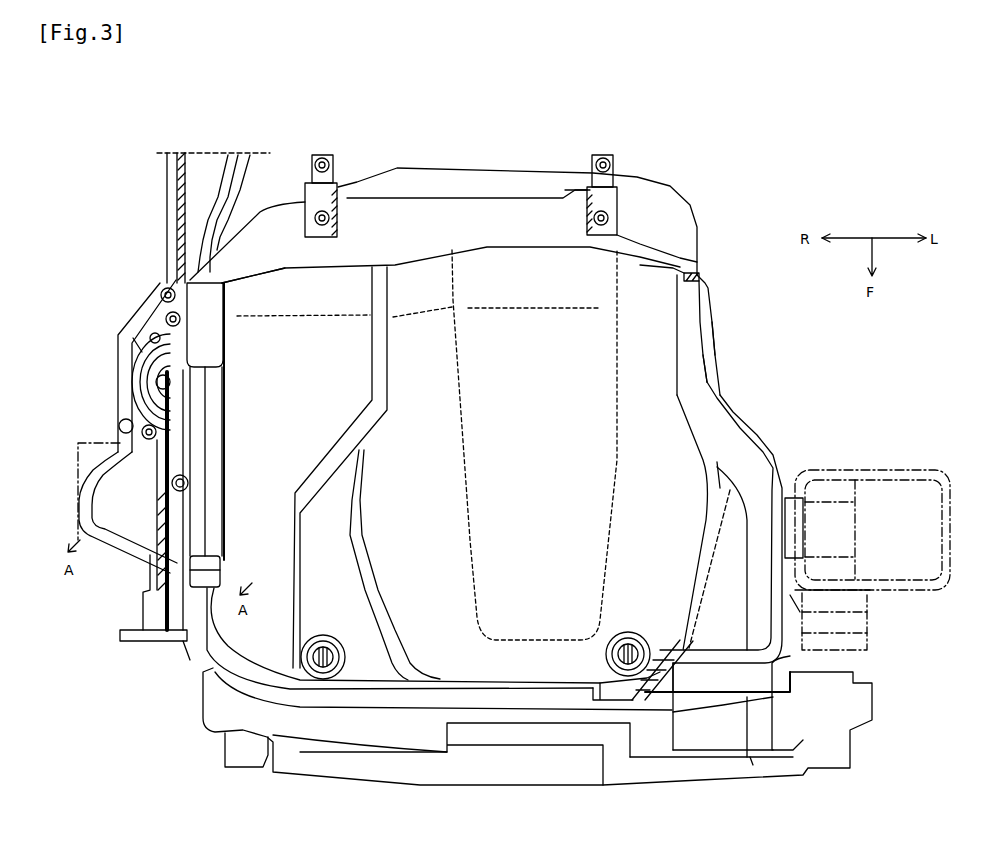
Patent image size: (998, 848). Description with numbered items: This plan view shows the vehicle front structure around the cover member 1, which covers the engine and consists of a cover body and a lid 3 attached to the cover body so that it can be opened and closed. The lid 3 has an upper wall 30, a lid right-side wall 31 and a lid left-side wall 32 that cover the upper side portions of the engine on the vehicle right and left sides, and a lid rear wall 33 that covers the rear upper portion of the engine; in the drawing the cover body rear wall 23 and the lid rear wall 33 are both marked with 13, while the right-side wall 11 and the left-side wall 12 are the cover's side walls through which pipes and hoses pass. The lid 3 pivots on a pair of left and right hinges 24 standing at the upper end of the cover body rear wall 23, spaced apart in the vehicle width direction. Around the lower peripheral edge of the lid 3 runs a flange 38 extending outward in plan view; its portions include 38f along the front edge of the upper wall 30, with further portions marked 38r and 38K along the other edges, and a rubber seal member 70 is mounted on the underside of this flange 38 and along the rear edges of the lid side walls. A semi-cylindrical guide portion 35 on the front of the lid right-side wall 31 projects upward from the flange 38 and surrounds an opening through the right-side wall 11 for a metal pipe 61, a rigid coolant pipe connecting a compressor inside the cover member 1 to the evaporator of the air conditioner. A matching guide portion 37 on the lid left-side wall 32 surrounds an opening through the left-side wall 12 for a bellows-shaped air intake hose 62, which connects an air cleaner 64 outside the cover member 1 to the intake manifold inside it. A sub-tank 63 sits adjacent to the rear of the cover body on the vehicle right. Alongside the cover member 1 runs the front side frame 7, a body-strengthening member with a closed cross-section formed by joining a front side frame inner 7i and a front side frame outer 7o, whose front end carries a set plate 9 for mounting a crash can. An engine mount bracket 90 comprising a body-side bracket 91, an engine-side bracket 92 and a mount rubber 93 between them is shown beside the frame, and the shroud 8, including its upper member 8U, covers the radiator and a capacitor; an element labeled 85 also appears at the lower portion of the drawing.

The cover member 1 is at (168, 724).
The lid 3 is at (645, 236).
The front side frame 7 is at (156, 233).
The front side frame inner 7i is at (200, 163).
The front side frame outer 7o is at (166, 203).
The shroud 8 is at (322, 787).
The upper member 8U is at (453, 787).
The set plate 9 is at (140, 641).
The right-side wall 11 is at (248, 419).
The left-side wall 12 is at (734, 405).
The upper portion 13 is at (536, 256).
The cover body rear wall 23 is at (462, 168).
The hinges 24 is at (338, 162).
The upper wall 30 is at (672, 340).
The lid right-side wall 31 is at (217, 448).
The lid left-side wall 32 is at (700, 388).
The lid rear wall 33 is at (650, 265).
The guide portion 35 is at (213, 551).
The guide portion 37 is at (775, 478).
The flange 38 is at (499, 436).
The flange 38r is at (410, 213).
The rib right portion 38K is at (732, 432).
The flange 38f is at (418, 718).
The metal pipe 61 is at (100, 506).
The air intake hose 62 is at (800, 482).
The sub-tank 63 is at (78, 455).
The air cleaner 64 is at (882, 593).
The seal member 70 is at (143, 604).
The lower casing projection 85 is at (752, 760).
The engine mount bracket 90 is at (140, 340).
The body-side bracket 91 is at (132, 366).
The engine-side bracket 92 is at (133, 385).
The mount rubber 93 is at (119, 425).